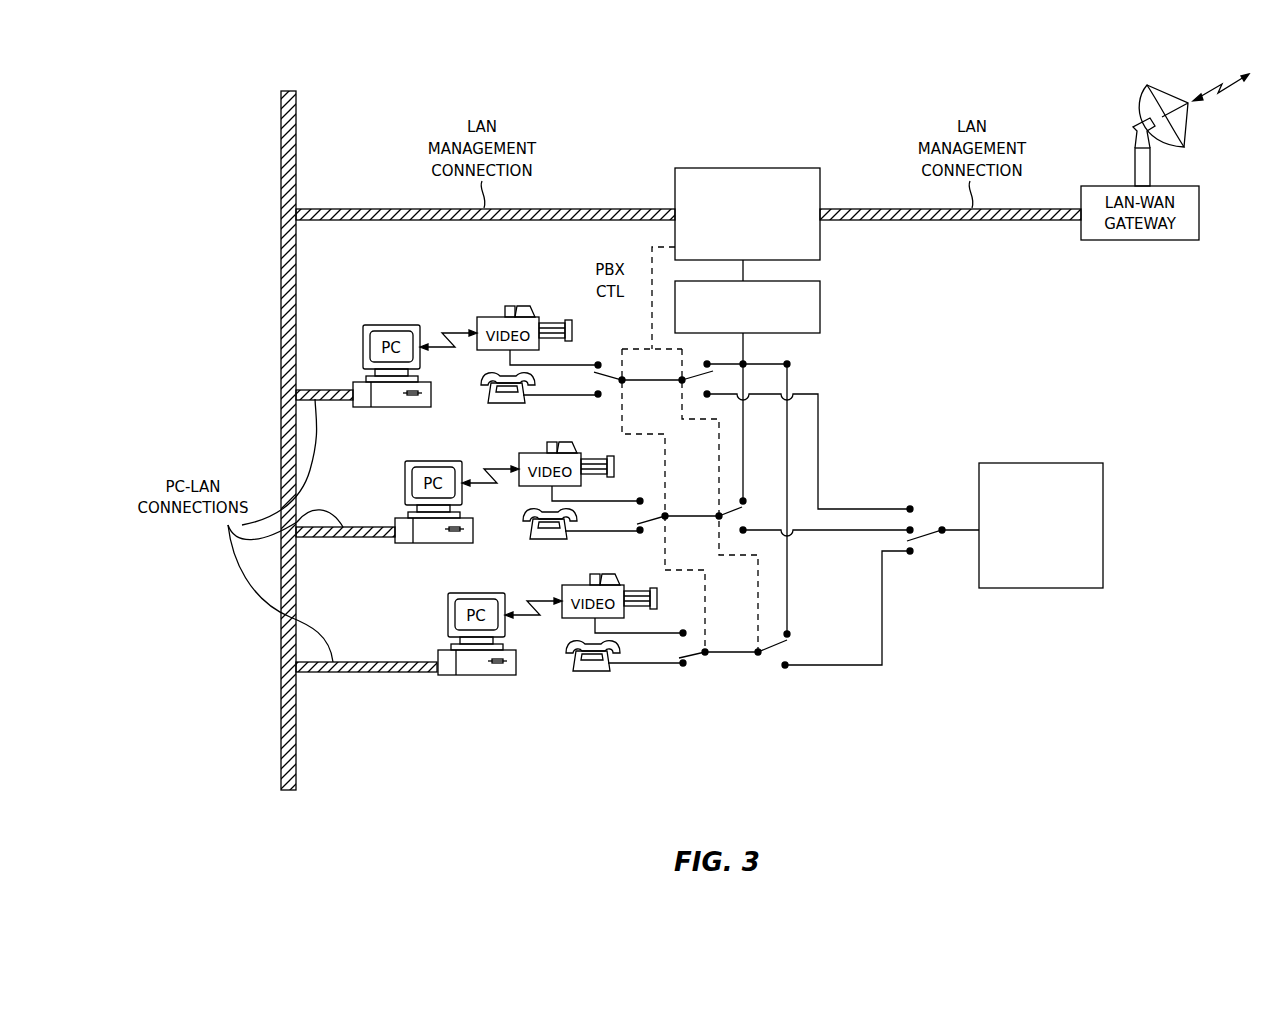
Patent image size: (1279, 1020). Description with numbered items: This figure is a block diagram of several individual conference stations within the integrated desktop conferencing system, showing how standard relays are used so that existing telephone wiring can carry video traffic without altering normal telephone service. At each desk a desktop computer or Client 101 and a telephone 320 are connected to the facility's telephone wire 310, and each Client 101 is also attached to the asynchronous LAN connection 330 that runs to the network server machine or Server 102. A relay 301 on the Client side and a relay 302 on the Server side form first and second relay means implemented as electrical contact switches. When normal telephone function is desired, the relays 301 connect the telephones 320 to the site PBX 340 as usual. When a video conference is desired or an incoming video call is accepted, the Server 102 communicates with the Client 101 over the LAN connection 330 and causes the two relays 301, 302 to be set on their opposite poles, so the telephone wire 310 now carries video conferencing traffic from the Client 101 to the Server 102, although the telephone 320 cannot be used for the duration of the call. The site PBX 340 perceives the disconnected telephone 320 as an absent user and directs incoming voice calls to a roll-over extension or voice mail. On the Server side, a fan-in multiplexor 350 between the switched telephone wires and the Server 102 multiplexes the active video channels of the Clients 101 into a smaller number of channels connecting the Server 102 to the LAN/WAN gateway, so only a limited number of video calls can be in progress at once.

The LAN connection 330 is at (281, 184).
The desktop computer 101 is at (387, 407).
The telephone 320 is at (488, 397).
The relay 301 is at (606, 370).
The relay 302 is at (712, 371).
The network server machine 102 is at (779, 252).
The fan-in multiplexor 350 is at (783, 322).
The telephone wire 310 is at (737, 653).
The site PBX 340 is at (1059, 579).